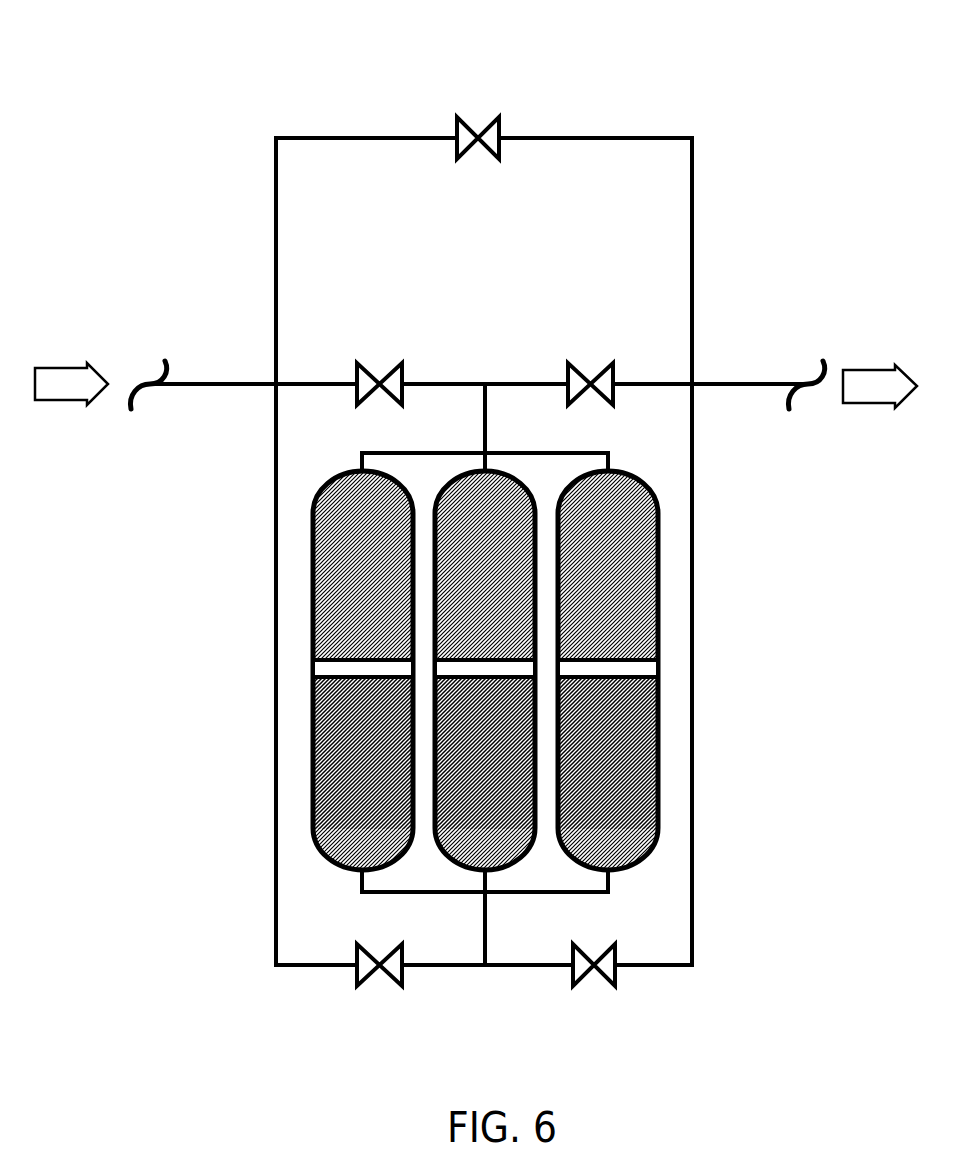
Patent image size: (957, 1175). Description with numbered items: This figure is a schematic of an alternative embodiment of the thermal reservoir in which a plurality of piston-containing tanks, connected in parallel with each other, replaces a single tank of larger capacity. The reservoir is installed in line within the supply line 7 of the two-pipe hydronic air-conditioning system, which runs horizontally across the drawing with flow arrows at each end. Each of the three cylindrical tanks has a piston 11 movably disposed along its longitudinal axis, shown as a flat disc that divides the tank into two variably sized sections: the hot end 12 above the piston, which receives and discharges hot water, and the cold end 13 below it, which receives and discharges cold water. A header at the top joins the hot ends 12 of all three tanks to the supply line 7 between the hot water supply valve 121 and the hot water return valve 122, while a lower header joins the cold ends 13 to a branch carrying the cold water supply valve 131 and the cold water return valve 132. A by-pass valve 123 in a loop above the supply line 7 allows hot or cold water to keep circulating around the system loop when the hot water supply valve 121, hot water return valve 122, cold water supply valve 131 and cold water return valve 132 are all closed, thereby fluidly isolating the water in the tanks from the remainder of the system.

The supply line 7 is at (236, 381).
The piston 11 is at (362, 665).
The hot end 12 is at (362, 562).
The cold end 13 is at (607, 770).
The hot water supply valve 121 is at (377, 371).
The hot water return valve 122 is at (598, 371).
The by-pass valve 123 is at (476, 126).
The cold water supply valve 131 is at (378, 978).
The cold water return valve 132 is at (595, 978).